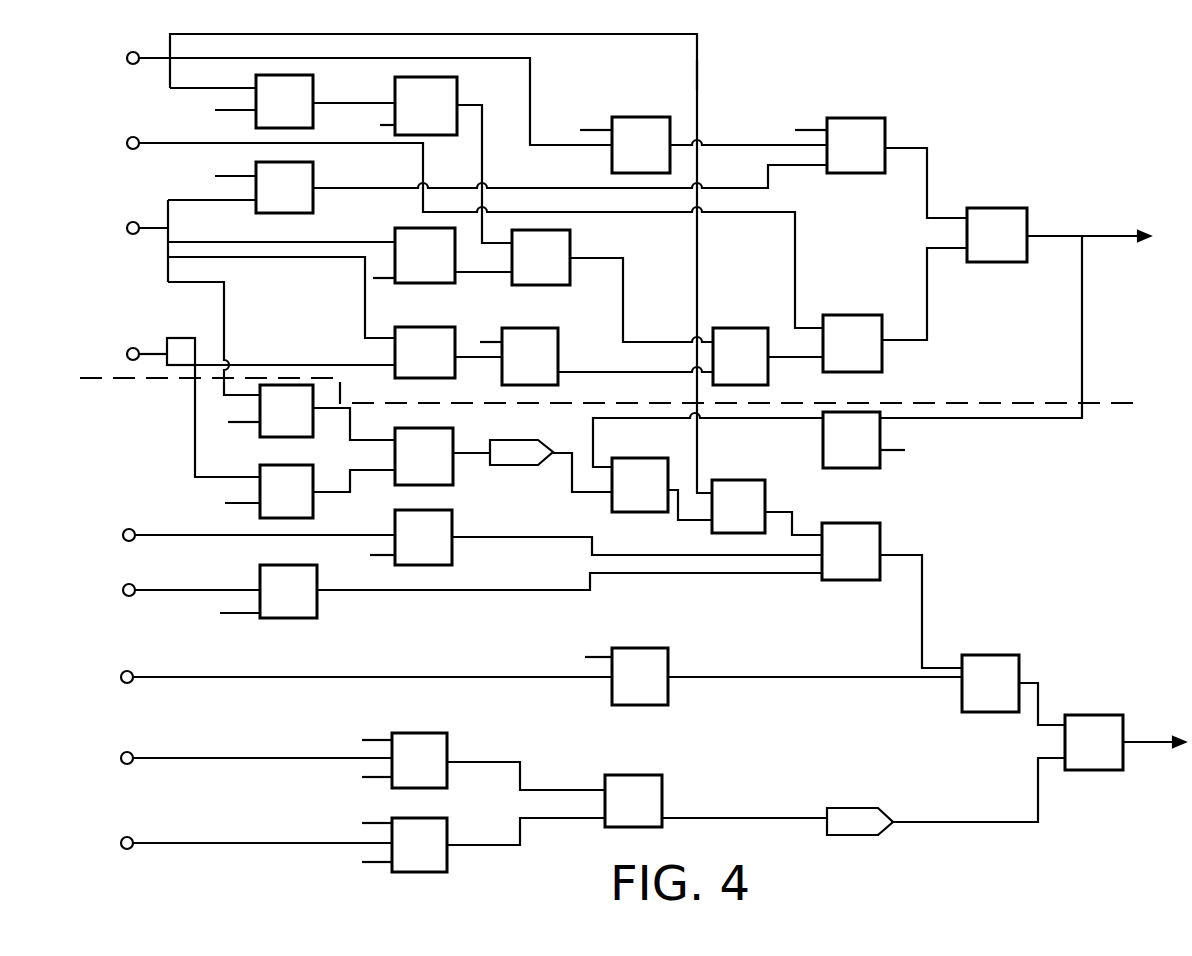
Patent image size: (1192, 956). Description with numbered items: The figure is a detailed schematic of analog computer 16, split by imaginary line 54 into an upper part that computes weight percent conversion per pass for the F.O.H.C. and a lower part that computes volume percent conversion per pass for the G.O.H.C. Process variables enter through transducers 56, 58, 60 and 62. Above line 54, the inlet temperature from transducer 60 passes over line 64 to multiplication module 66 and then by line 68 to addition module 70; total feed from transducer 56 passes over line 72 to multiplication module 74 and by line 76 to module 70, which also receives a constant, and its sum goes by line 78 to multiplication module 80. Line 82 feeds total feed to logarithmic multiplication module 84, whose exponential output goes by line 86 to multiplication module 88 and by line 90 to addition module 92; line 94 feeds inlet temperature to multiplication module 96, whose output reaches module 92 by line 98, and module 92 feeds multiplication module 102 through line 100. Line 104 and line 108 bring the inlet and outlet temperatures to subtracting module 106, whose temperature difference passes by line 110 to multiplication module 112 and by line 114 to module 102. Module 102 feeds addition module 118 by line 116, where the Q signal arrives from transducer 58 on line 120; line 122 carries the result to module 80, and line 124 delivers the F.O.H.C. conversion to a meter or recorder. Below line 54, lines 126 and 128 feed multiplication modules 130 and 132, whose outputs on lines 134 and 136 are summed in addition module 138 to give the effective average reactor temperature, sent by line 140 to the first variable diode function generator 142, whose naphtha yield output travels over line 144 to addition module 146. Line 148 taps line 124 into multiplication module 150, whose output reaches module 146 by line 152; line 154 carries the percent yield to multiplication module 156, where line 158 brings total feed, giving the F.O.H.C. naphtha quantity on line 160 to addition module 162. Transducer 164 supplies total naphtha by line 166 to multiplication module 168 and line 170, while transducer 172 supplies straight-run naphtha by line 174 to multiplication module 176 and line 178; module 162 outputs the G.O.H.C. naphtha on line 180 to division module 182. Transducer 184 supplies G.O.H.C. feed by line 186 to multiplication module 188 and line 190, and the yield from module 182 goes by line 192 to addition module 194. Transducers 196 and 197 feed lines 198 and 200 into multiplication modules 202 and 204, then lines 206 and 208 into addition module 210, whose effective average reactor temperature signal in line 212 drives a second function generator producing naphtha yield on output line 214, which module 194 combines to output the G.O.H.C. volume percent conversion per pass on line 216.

The computer 16 is at (185, 27).
The imaginary line 54 is at (1168, 395).
The transducer 56 is at (136, 65).
The transducer 58 is at (144, 134).
The transducer 60 is at (135, 222).
The transducer 62 is at (136, 347).
The line 64 is at (192, 198).
The multiplication module 66 is at (315, 168).
The line 68 is at (568, 186).
The addition module 70 is at (871, 118).
The line 72 is at (237, 58).
The multiplication module 74 is at (636, 117).
The line 76 is at (765, 147).
The line 78 is at (932, 158).
The multiplication module 80 is at (997, 208).
The line 82 is at (230, 88).
The logarithmic multiplication module 84 is at (315, 80).
The line 86 is at (334, 103).
The multiplication module 88 is at (458, 82).
The line 90 is at (482, 160).
The addition module 92 is at (570, 232).
The line 94 is at (245, 242).
The multiplication module 96 is at (406, 228).
The line 98 is at (472, 273).
The line 100 is at (624, 283).
The multiplication module 102 is at (750, 320).
The line 104 is at (268, 258).
The subtracting module 106 is at (430, 327).
The line 108 is at (320, 365).
The line 110 is at (485, 358).
The multiplication module 112 is at (540, 328).
The line 114 is at (635, 372).
The line 116 is at (795, 360).
The addition module 118 is at (862, 315).
The line 120 is at (797, 225).
The line 122 is at (930, 288).
The line 124 is at (1100, 240).
The line 126 is at (226, 310).
The line 128 is at (195, 432).
The multiplication module 130 is at (278, 410).
The multiplication module 132 is at (290, 465).
The line 134 is at (352, 441).
The line 136 is at (376, 478).
The addition module 138 is at (440, 428).
The line 140 is at (480, 462).
The first variable diode function generator 142 is at (516, 445).
The line 144 is at (572, 470).
The addition module 146 is at (624, 461).
The line 148 is at (1080, 330).
The multiplication module 150 is at (823, 441).
The line 152 is at (781, 420).
The line 154 is at (700, 523).
The multiplication module 156 is at (766, 482).
The line 158 is at (697, 72).
The line 160 is at (797, 528).
The addition module 162 is at (882, 531).
The transducer 164 is at (135, 521).
The line 166 is at (172, 535).
The multiplication module 168 is at (453, 526).
The line 170 is at (560, 537).
The transducer 172 is at (135, 579).
The line 174 is at (160, 592).
The multiplication module 176 is at (295, 563).
The line 178 is at (425, 592).
The line 180 is at (925, 577).
The division module 182 is at (999, 655).
The transducer 184 is at (130, 670).
The line 186 is at (370, 680).
The multiplication module 188 is at (641, 648).
The line 190 is at (820, 677).
The line 192 is at (1040, 703).
The addition module 194 is at (1085, 716).
The transducer 196 is at (140, 746).
The transducer 197 is at (140, 831).
The line 198 is at (250, 758).
The line 200 is at (213, 843).
The multiplication module 202 is at (420, 733).
The multiplication module 204 is at (425, 818).
The line 206 is at (588, 790).
The line 208 is at (568, 820).
The addition module 210 is at (662, 780).
The line 212 is at (730, 822).
The output line 214 is at (985, 820).
The line 216 is at (1148, 752).